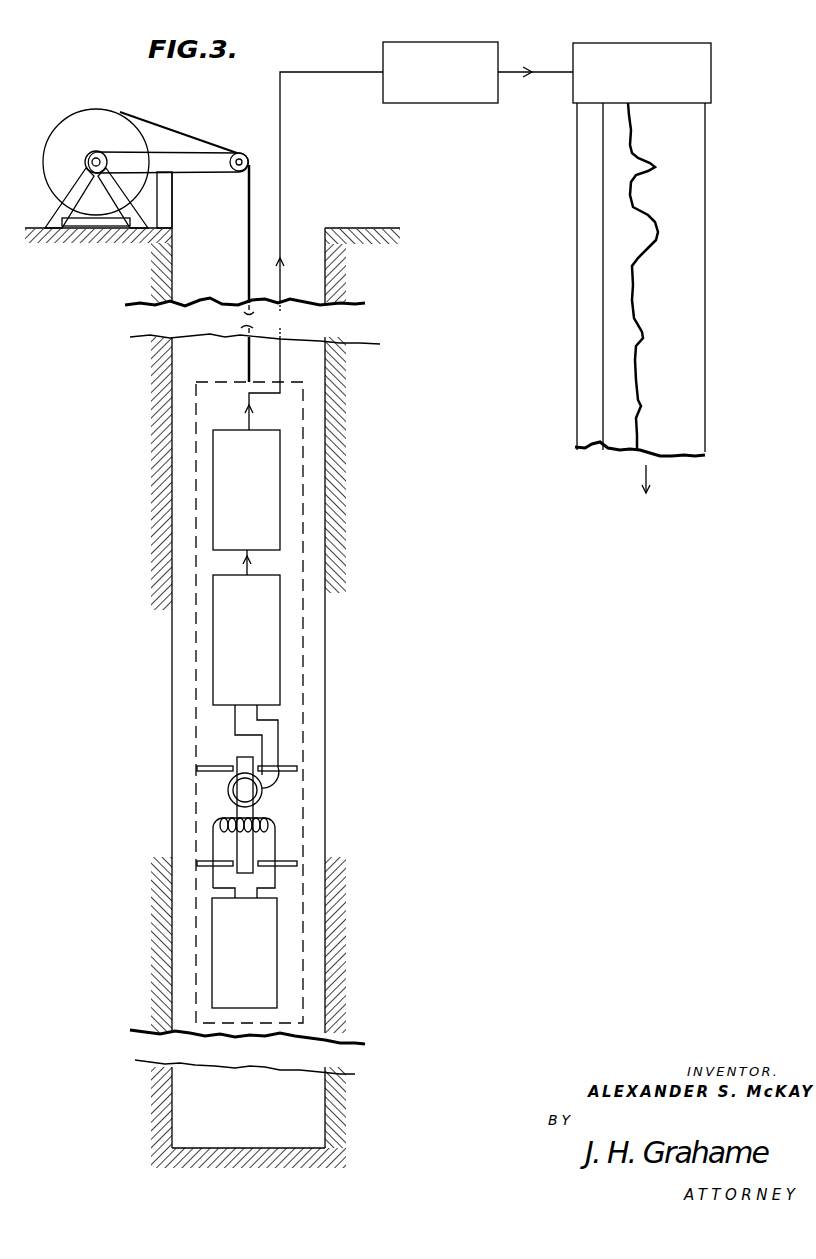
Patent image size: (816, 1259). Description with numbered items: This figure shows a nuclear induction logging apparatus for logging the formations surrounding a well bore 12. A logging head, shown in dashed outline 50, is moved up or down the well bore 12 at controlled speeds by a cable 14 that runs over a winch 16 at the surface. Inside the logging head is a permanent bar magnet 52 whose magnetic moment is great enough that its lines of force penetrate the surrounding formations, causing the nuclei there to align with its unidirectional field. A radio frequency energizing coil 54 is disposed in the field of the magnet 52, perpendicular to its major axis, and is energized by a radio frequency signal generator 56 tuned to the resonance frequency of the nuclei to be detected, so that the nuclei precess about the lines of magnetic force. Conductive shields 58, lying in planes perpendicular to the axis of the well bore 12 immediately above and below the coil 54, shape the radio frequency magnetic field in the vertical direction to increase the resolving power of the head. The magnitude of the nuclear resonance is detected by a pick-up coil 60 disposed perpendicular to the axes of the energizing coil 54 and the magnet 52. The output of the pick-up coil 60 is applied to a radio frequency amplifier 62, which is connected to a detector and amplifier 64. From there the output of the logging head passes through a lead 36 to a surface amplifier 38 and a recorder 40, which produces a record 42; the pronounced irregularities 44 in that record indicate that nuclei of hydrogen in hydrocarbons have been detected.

The well bore 12 is at (330, 405).
The cable 14 is at (249, 270).
The winch 16 is at (72, 128).
The lead 36 is at (280, 190).
The amplifier 38 is at (428, 42).
The recorder 40 is at (650, 43).
The record 42 is at (700, 135).
The pronounced irregularities 44 is at (660, 226).
The instrument housing 50 is at (303, 481).
The permanent bar magnet 52 is at (258, 877).
The radio frequency energizing coil 54 is at (265, 822).
The radio frequency signal generator 56 is at (277, 945).
The conductive shields 58 is at (217, 765).
The pick-up coil 60 is at (230, 797).
The radio frequency amplifier 62 is at (213, 650).
The detector and amplifier 64 is at (213, 495).